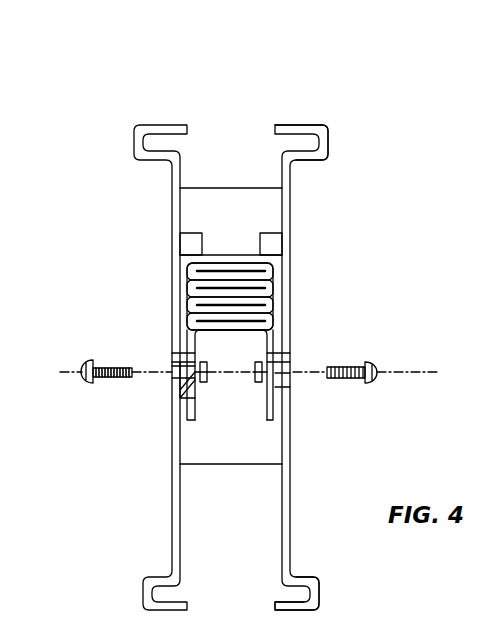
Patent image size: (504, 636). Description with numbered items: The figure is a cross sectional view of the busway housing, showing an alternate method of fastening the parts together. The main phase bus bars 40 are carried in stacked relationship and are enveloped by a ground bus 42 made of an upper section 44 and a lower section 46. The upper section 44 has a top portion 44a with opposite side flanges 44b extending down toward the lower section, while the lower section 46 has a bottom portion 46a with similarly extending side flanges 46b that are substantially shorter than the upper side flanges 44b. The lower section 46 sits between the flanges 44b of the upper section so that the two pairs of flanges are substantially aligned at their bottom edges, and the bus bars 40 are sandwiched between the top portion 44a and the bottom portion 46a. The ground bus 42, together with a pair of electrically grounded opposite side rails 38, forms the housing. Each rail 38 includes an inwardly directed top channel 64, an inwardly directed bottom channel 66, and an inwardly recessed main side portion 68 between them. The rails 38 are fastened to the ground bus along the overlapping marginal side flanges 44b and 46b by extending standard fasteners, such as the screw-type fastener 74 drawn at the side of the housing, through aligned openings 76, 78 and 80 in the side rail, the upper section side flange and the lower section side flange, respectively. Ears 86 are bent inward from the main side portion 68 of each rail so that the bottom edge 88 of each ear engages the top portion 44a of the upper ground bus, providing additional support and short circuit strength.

The side rails 38 is at (291, 455).
The main phase bus bars 40 is at (186, 320).
The ground bus 42 is at (210, 263).
The upper section 44 is at (236, 263).
The top portion 44a is at (226, 263).
The upper side flanges 44b is at (181, 415).
The lower section 46 is at (268, 328).
The bottom portion 46a is at (273, 340).
The lower side flanges 46b is at (193, 408).
The top channel 64 is at (327, 128).
The bottom channel 66 is at (317, 592).
The main side portion 68 is at (285, 490).
The adjusting screw 74 is at (375, 365).
The opening in side rail 76 is at (180, 385).
The opening in upper section side flange 78 is at (172, 380).
The opening in lower section side flange 80 is at (130, 374).
The ears 86 is at (190, 230).
The bottom edge 88 is at (284, 262).